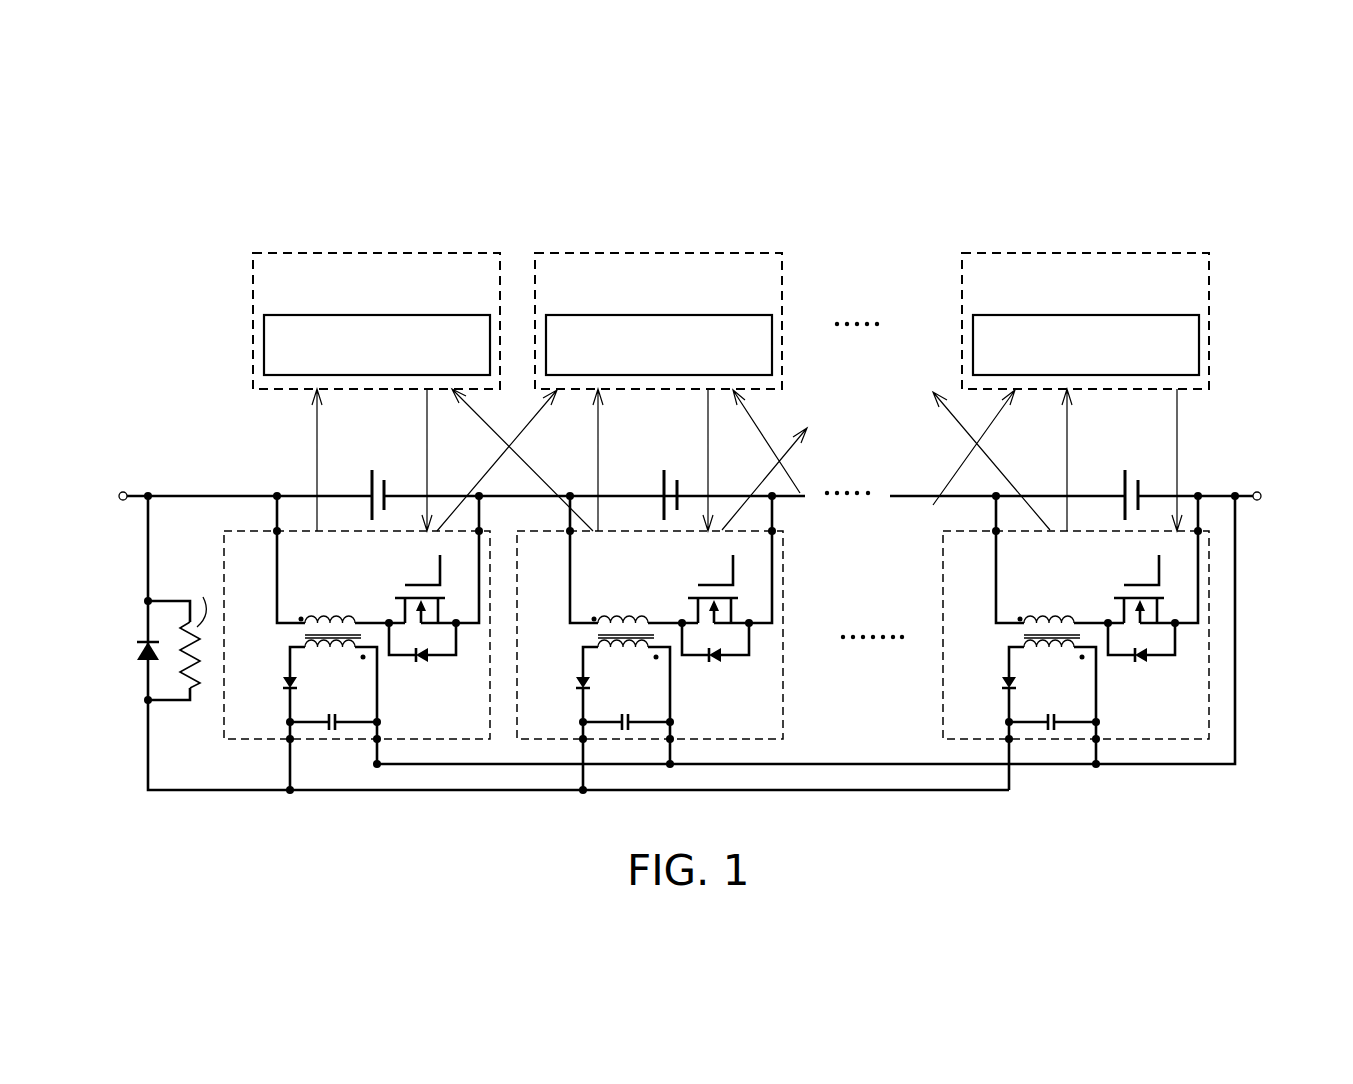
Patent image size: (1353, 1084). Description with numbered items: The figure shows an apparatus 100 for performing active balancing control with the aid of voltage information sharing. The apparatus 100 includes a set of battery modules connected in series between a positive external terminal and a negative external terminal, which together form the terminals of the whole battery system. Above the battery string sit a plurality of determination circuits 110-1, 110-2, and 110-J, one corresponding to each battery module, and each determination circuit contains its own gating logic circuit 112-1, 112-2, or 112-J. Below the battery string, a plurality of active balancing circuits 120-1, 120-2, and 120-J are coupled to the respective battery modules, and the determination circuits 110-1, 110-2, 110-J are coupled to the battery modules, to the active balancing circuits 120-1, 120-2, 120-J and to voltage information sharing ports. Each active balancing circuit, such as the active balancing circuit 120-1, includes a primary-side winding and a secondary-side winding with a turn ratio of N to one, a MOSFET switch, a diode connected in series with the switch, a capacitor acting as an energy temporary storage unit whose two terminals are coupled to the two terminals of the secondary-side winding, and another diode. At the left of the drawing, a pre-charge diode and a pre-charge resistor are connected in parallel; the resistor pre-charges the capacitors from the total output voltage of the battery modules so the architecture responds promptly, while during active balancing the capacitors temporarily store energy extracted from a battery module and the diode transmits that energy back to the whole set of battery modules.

The apparatus 100 is at (1190, 170).
The determination circuit 110-1 is at (375, 252).
The determination circuit 110-2 is at (658, 300).
The determination circuit 110-J is at (1085, 300).
The gating logic circuit 112-1 is at (458, 315).
The gating logic circuit 112-2 is at (660, 295).
The gating logic circuit 112-J is at (1086, 295).
The active balancing circuit 120-1 is at (274, 742).
The active balancing circuit 120-2 is at (698, 643).
The active balancing circuit 120-J is at (1028, 641).